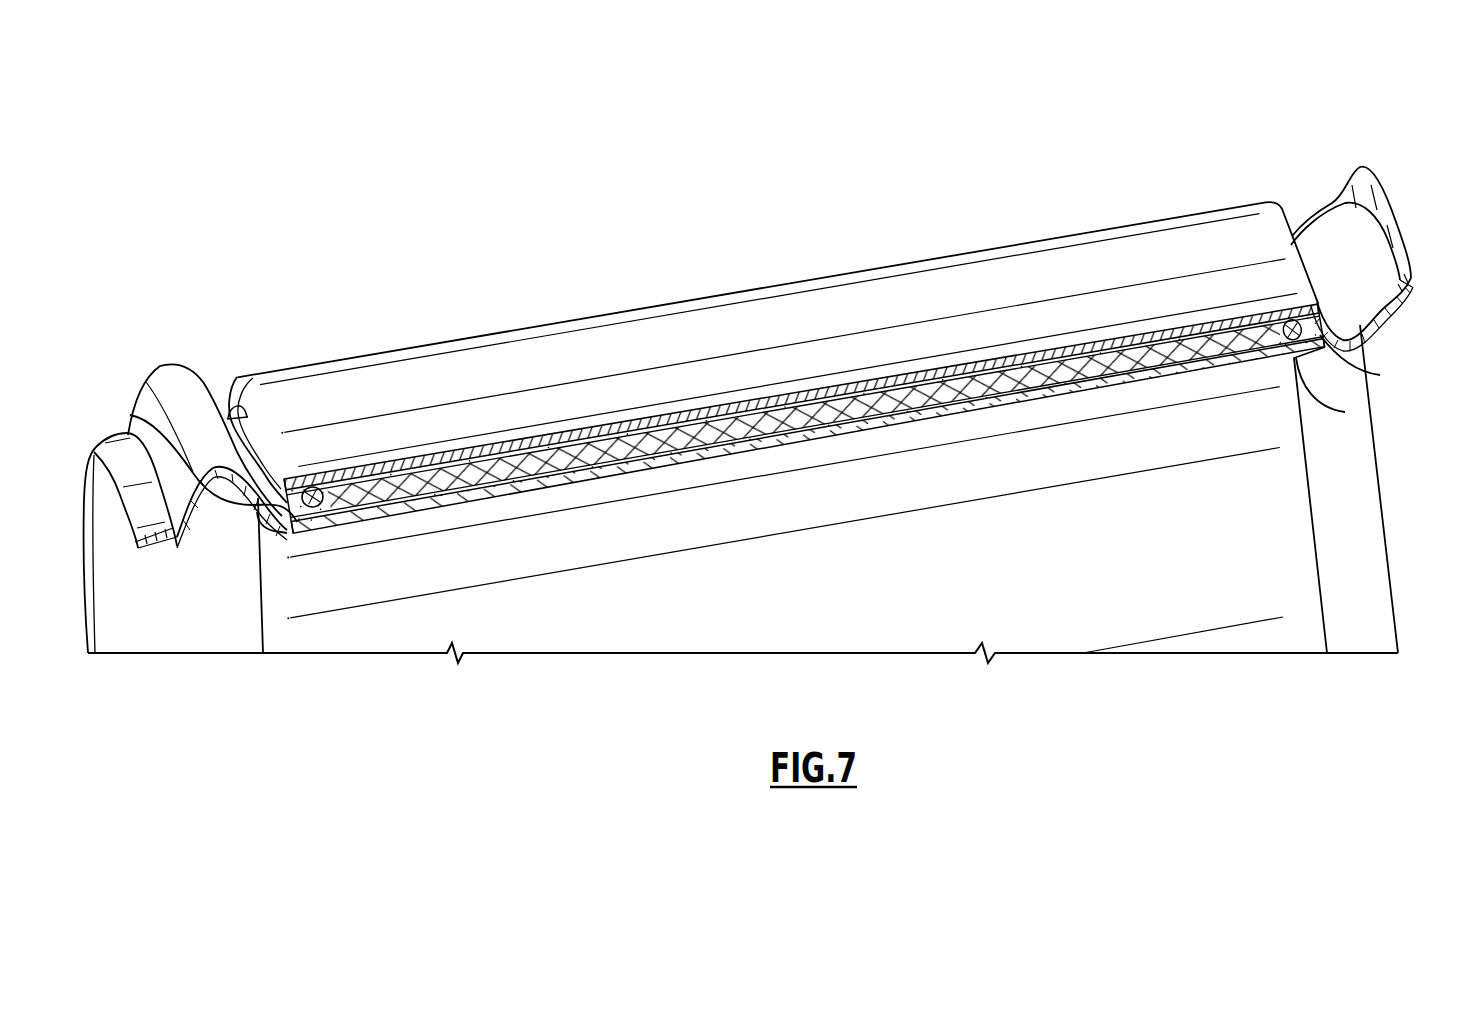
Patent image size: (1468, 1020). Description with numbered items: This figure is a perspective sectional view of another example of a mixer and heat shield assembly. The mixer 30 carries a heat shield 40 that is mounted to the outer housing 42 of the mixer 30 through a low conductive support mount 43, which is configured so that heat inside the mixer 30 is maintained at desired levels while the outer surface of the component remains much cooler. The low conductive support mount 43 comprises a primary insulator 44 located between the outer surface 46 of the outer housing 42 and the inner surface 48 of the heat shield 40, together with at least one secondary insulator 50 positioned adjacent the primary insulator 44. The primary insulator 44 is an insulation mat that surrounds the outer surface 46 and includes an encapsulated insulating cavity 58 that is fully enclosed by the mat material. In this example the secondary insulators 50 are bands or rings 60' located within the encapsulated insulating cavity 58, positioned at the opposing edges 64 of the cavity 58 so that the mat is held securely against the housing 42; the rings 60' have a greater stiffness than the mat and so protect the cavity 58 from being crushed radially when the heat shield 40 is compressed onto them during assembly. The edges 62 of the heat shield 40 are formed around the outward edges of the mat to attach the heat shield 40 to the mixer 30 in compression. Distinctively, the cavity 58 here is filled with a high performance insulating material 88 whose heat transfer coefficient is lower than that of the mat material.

The mixer 30 is at (412, 177).
The heat shield 40 is at (695, 326).
The outer housing 42 is at (1335, 205).
The low conductive support mount 43 is at (1296, 198).
The primary insulator 44 is at (442, 457).
The outer surface 46 is at (1380, 375).
The inner surface 48 is at (1200, 323).
The secondary insulator 50 is at (315, 480).
The encapsulated insulating cavity 58 is at (927, 382).
The rings 60' is at (826, 408).
The edges of the heat shield 62 is at (196, 370).
The opposing edges of the cavity 64 is at (134, 416).
The high performance insulating material 88 is at (1094, 365).